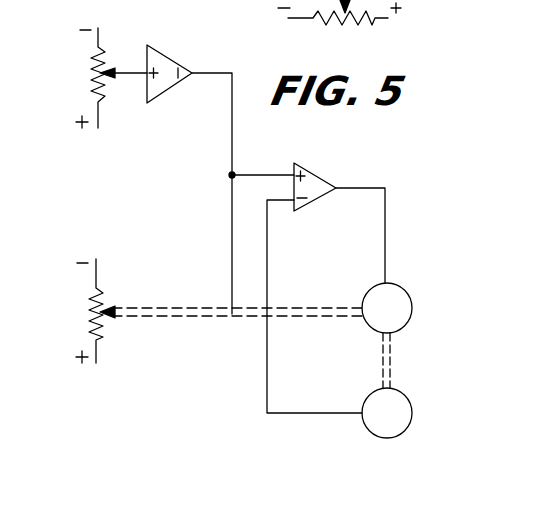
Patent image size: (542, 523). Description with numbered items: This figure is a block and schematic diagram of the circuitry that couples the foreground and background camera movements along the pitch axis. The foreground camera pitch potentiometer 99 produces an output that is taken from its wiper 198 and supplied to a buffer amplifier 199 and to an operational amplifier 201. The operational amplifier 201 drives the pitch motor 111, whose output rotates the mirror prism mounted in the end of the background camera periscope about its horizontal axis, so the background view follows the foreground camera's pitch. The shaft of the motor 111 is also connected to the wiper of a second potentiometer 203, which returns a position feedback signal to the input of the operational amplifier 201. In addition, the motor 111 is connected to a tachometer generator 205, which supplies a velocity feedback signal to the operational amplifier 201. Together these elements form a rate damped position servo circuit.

The foreground camera pitch potentiometer 99 is at (95, 62).
The wiper 198 is at (132, 73).
The buffer amplifier 199 is at (180, 60).
The operational amplifier 201 is at (293, 163).
The potentiometer 203 is at (97, 292).
The pitch motor 111 is at (410, 285).
The tachometer generator 205 is at (366, 395).